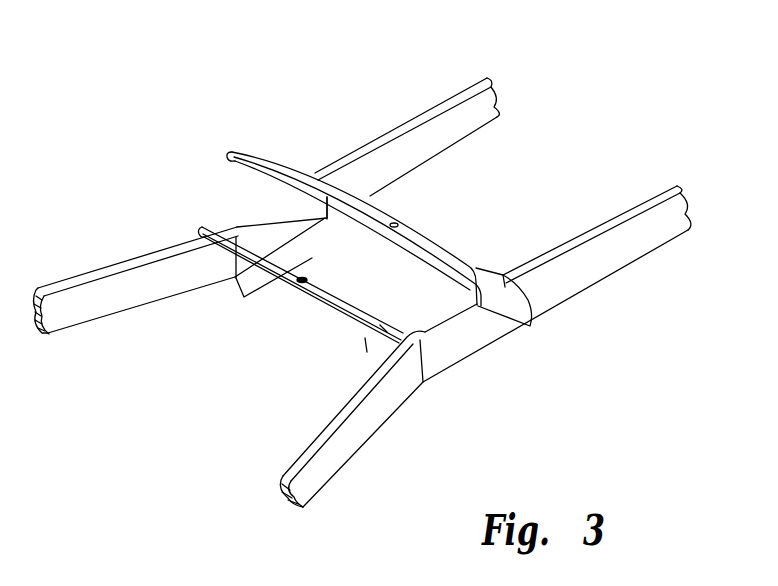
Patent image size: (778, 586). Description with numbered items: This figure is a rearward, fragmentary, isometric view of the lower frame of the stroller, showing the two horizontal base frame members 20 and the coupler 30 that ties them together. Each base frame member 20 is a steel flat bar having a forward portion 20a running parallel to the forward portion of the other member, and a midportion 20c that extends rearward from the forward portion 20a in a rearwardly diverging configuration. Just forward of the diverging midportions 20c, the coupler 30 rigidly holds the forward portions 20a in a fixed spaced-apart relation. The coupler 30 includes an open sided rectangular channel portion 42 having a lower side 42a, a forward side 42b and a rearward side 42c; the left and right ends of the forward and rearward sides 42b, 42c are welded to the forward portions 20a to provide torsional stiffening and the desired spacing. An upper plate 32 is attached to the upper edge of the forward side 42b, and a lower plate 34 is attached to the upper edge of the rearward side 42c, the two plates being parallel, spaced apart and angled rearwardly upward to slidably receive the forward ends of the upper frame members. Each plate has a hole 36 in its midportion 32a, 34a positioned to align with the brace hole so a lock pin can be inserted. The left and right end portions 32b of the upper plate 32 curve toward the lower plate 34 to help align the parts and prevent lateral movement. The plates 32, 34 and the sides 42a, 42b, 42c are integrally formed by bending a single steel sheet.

The base frame member 20 is at (160, 251).
The forward portion 20a is at (458, 118).
The midportion 20c is at (85, 290).
The coupler 30 is at (438, 241).
The upper plate 32 is at (401, 236).
The midportion 32a is at (472, 264).
The end portion 32b is at (240, 150).
The lower plate 34 is at (300, 316).
The midportion 34a is at (303, 283).
The hole 36 is at (397, 222).
The channel portion 42 is at (342, 317).
The lower side 42a is at (247, 287).
The forward side 42b is at (335, 219).
The rearward side 42c is at (366, 350).